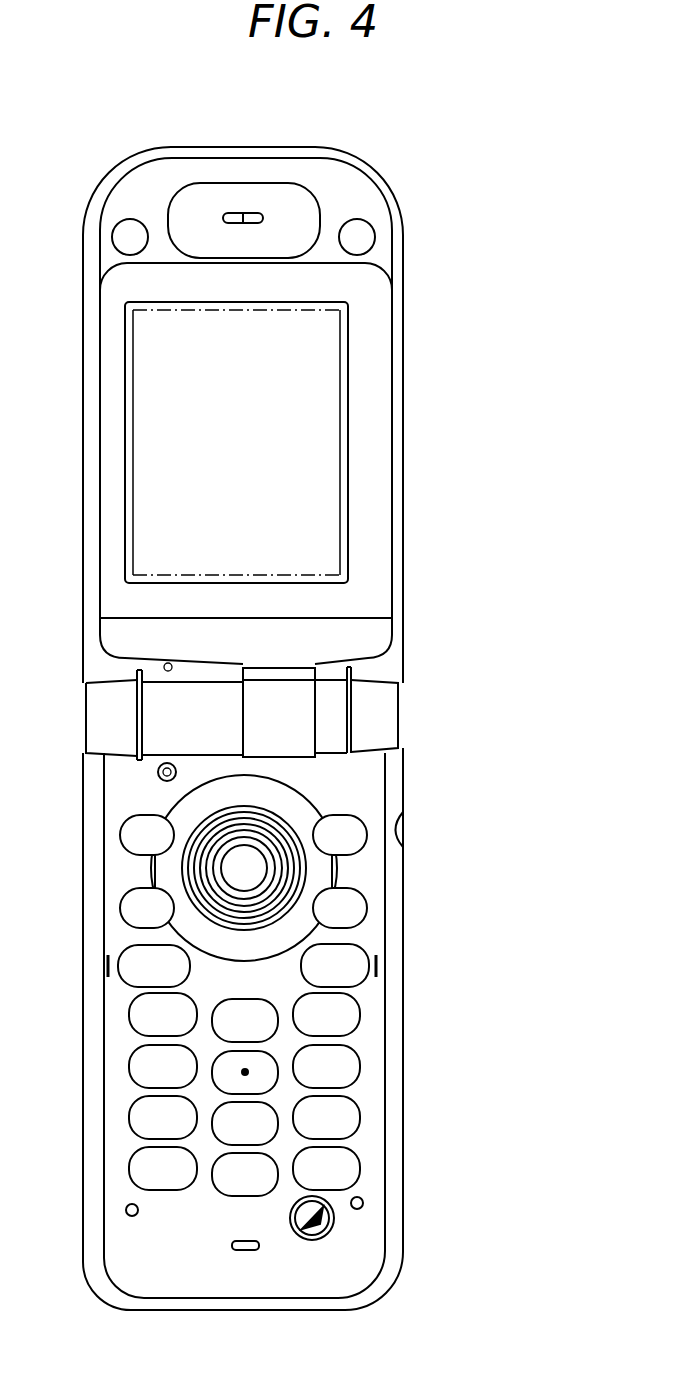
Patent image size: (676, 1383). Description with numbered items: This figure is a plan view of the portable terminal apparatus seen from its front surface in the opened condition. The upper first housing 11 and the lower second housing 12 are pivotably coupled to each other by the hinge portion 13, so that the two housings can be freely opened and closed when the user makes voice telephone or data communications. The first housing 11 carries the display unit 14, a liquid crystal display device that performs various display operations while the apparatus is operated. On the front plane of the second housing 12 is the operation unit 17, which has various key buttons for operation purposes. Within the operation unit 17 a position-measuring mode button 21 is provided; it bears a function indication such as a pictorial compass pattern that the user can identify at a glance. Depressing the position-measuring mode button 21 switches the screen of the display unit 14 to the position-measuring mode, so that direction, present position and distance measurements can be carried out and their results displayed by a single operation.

The first housing 11 is at (397, 420).
The display unit 14 is at (295, 515).
The hinge portion 13 is at (377, 720).
The second housing 12 is at (397, 787).
The operation unit 17 is at (360, 1002).
The position-measuring mode button 21 is at (332, 1227).